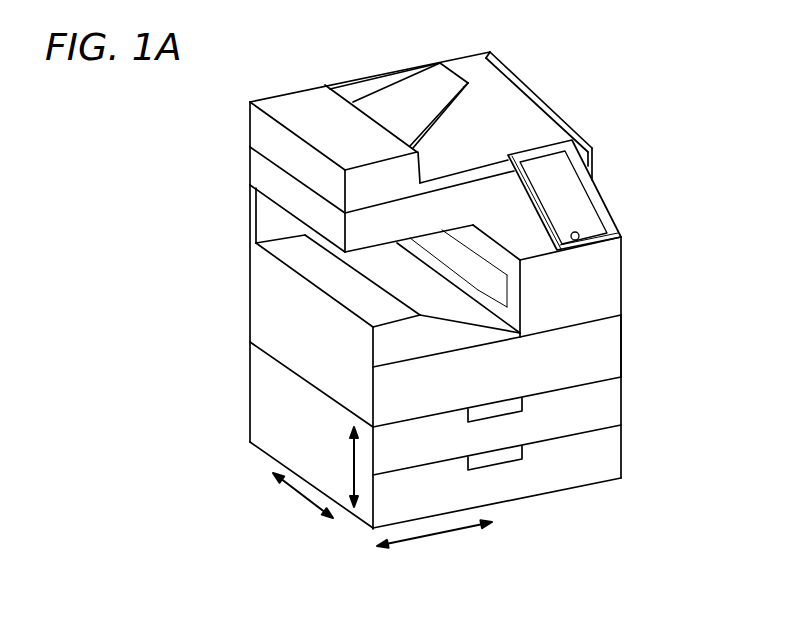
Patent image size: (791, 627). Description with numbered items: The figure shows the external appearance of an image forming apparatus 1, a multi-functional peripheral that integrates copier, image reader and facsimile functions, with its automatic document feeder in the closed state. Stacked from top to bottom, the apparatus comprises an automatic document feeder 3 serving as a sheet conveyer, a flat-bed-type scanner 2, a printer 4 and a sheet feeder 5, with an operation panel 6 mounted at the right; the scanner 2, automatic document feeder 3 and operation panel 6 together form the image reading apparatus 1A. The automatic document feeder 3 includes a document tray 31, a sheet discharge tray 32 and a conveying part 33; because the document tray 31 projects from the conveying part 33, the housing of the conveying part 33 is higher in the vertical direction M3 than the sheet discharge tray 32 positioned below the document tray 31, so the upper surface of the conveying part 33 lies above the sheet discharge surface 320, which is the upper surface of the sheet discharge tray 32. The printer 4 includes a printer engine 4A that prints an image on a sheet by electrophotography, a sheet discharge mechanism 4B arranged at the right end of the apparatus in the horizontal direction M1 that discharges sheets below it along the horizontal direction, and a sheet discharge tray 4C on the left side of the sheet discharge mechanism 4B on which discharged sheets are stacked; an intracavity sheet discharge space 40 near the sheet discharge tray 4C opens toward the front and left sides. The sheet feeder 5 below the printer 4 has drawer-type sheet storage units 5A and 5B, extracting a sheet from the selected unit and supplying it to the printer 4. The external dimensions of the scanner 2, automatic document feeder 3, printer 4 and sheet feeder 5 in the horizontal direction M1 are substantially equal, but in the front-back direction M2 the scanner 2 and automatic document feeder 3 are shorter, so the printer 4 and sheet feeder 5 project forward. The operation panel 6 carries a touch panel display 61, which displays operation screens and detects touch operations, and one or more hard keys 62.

The image forming apparatus 1 is at (451, 20).
The image reading apparatus 1A is at (583, 117).
The flat-bed-type scanner 2 is at (247, 170).
The automatic document feeder 3 is at (247, 123).
The document tray 31 is at (408, 90).
The sheet discharge tray 32 is at (484, 178).
The conveying part 33 is at (321, 128).
The sheet discharge surface 320 is at (462, 137).
The printer 4 is at (672, 235).
The printer engine 4A is at (608, 347).
The sheet discharge mechanism 4B is at (608, 302).
The sheet discharge tray 4C is at (418, 302).
The intracavity sheet discharge space 40 is at (388, 262).
The sheet feeder 5 is at (672, 373).
The sheet storage unit 5A is at (608, 405).
The sheet storage unit 5B is at (608, 452).
The operation panel 6 is at (607, 205).
The touch panel display 61 is at (587, 177).
The hard keys 62 is at (568, 236).
The horizontal direction M1 is at (434, 541).
The front-back direction M2 is at (303, 499).
The vertical direction M3 is at (337, 467).